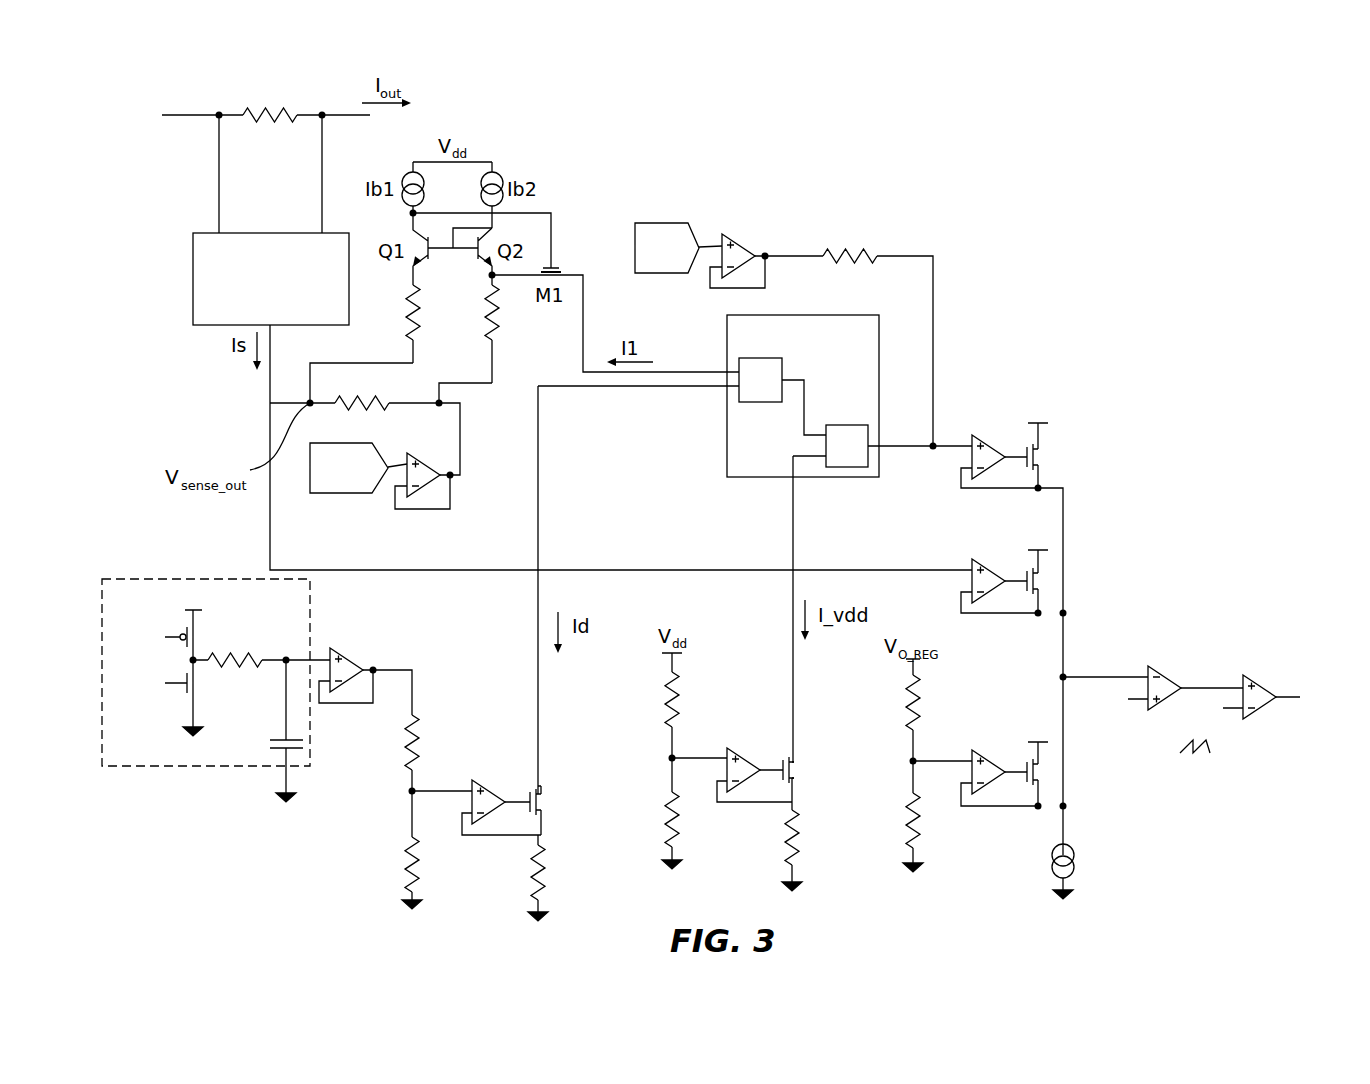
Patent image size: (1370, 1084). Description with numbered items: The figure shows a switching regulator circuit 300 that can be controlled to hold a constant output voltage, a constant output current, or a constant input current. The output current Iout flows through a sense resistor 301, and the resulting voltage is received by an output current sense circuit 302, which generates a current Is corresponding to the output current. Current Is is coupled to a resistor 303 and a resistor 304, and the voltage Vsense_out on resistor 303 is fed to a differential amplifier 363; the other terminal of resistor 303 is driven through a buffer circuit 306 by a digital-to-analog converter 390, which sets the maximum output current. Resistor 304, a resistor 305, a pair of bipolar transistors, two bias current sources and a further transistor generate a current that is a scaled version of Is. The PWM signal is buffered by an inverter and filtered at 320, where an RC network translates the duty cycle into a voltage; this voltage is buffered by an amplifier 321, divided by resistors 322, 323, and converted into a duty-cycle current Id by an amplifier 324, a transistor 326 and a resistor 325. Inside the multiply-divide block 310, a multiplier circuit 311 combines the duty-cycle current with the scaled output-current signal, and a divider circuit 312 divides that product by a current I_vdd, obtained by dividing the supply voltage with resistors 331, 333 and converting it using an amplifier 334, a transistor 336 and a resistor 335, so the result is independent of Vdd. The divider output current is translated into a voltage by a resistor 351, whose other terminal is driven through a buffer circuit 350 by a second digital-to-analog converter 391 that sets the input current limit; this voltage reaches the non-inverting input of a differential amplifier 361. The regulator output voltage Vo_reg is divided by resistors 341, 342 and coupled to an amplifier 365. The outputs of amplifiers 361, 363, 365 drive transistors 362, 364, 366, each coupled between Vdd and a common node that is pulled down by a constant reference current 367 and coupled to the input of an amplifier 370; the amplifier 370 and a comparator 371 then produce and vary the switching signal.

The circuit 300 is at (1157, 199).
The resistor 301 is at (266, 116).
The output current sense circuit 302 is at (193, 281).
The resistor 303 is at (374, 405).
The resistor 304 is at (388, 322).
The resistor 305 is at (468, 332).
The buffer circuit 306 is at (440, 445).
The multiply-divide block 310 is at (762, 418).
The multiplier circuit 311 is at (739, 358).
The divider circuit 312 is at (838, 470).
The filter 320 is at (190, 578).
The amplifier 321 is at (347, 648).
The resistor 322 is at (384, 753).
The resistor 323 is at (386, 850).
The amplifier 324 is at (512, 790).
The resistor 325 is at (559, 878).
The transistor 326 is at (542, 802).
The resistor 331 is at (648, 715).
The resistor 333 is at (649, 813).
The amplifier 334 is at (765, 757).
The resistor 335 is at (812, 846).
The transistor 336 is at (797, 770).
The resistor 341 is at (890, 718).
The resistor 342 is at (891, 816).
The buffer circuit 350 is at (758, 235).
The resistor 351 is at (849, 325).
The differential amplifier 361 is at (1003, 440).
The transistor 362 is at (1047, 459).
The differential amplifier 363 is at (1003, 564).
The transistor 364 is at (1047, 584).
The amplifier 365 is at (1003, 755).
The transistor 366 is at (1047, 774).
The reference current 367 is at (1089, 866).
The amplifier 370 is at (1178, 672).
The comparator 371 is at (1275, 677).
The digital-to-analog converter 390 is at (351, 493).
The digital-to-analog converter 391 is at (662, 204).